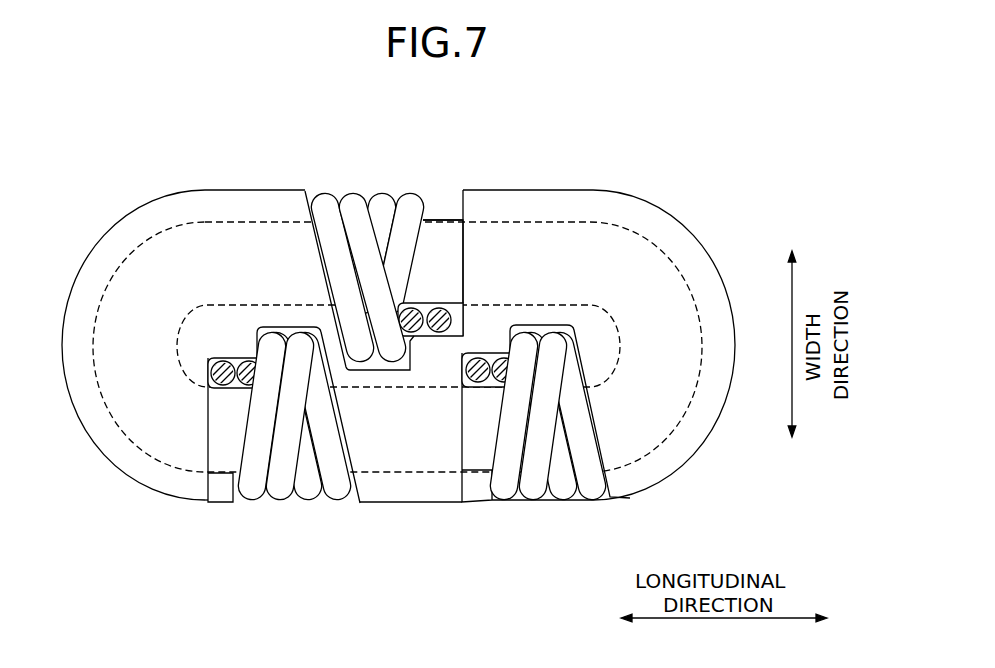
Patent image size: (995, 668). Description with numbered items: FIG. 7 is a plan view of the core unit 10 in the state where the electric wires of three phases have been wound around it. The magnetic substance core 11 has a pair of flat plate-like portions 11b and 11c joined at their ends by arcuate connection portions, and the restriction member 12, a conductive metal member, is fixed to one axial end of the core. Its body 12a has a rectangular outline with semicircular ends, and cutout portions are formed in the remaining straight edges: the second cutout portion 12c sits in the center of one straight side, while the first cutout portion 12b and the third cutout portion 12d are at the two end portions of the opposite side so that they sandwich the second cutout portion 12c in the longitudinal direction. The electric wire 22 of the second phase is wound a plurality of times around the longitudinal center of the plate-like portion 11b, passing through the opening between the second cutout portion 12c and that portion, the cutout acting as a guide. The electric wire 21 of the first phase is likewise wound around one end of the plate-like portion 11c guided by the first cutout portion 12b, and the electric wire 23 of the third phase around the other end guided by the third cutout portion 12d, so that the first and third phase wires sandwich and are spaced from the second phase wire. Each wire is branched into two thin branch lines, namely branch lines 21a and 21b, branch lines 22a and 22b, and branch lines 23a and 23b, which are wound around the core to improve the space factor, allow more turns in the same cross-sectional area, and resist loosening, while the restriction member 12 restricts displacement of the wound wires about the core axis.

The reactor 10 is at (572, 137).
The magnetic substance core 11 is at (439, 210).
The plate-like portion 11b is at (452, 247).
The plate-like portion 11c is at (474, 441).
The restriction member 12 is at (250, 183).
The body 12a is at (165, 190).
The first cutout portion 12b is at (218, 490).
The second cutout portion 12c is at (452, 195).
The third cutout portion 12d is at (469, 490).
The electric wire of a first phase 21 is at (238, 512).
The branch line 21a is at (248, 504).
The branch line 21b is at (278, 504).
The electric wire of a second phase 22 is at (303, 181).
The branch line 22a is at (327, 192).
The branch line 22b is at (357, 192).
The electric wire of a third phase 23 is at (491, 512).
The branch line 23a is at (503, 503).
The branch line 23b is at (531, 503).